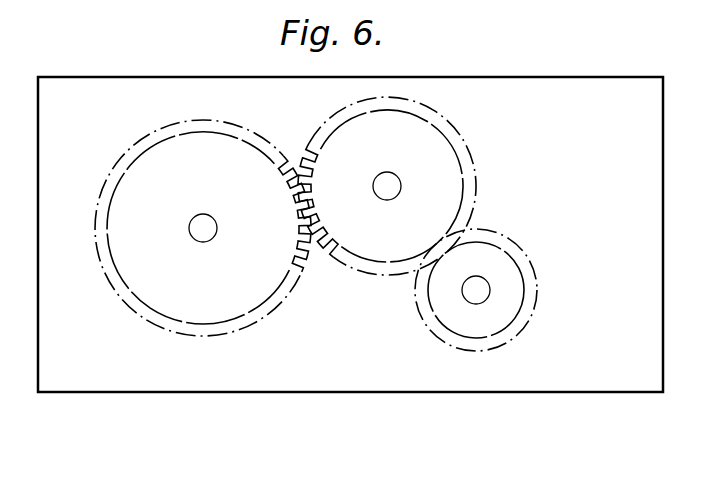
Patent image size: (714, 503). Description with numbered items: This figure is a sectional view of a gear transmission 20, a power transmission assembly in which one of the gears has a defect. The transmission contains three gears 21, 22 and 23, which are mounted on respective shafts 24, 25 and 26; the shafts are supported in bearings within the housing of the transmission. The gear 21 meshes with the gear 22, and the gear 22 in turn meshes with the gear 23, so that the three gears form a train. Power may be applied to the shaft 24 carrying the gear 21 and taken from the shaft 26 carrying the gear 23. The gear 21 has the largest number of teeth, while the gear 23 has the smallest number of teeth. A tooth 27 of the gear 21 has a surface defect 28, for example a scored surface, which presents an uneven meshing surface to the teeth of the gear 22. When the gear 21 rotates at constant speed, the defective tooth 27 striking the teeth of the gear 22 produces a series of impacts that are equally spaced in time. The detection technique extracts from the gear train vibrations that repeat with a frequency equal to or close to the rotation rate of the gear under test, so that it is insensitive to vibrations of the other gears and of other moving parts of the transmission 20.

The gear transmission 20 is at (138, 385).
The gear 21 is at (215, 217).
The gear 22 is at (398, 191).
The gear 23 is at (495, 290).
The shaft 24 is at (213, 237).
The shaft 25 is at (396, 190).
The shaft 26 is at (482, 282).
The tooth 27 is at (303, 268).
The surface defect 28 is at (299, 262).